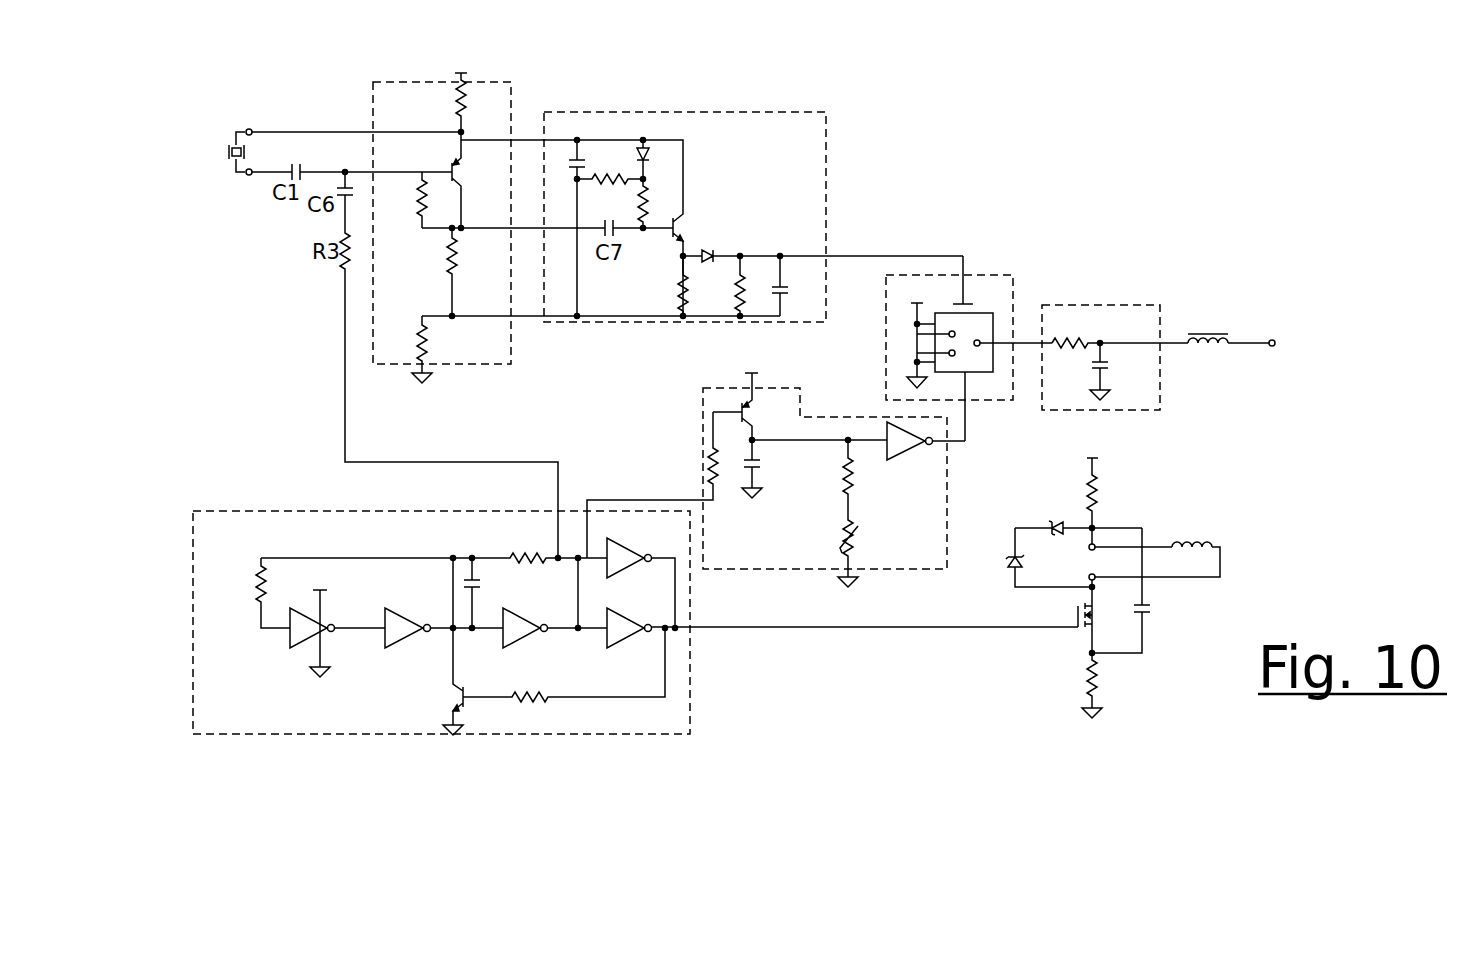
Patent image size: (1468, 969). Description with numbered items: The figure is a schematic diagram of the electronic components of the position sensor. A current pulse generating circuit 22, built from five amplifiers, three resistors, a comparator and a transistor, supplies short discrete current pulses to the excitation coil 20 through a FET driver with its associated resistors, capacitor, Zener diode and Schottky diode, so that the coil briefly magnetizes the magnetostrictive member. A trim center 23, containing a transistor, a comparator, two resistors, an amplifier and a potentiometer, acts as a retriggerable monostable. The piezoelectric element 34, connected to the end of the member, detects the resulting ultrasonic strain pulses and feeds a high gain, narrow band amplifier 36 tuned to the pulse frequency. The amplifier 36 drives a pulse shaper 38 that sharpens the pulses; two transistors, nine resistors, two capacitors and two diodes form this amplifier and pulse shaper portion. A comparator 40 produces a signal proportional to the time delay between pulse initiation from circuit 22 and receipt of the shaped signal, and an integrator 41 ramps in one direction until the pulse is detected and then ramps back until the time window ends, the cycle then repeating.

The excitation coil 20 is at (1220, 547).
The current pulse generating circuit 22 is at (193, 511).
The trim center 23 is at (703, 388).
The piezoelectric element 34 is at (227, 143).
The amplifier 36 is at (511, 82).
The pulse shaper 38 is at (827, 111).
The comparator 40 is at (1013, 273).
The integrator 41 is at (1158, 304).